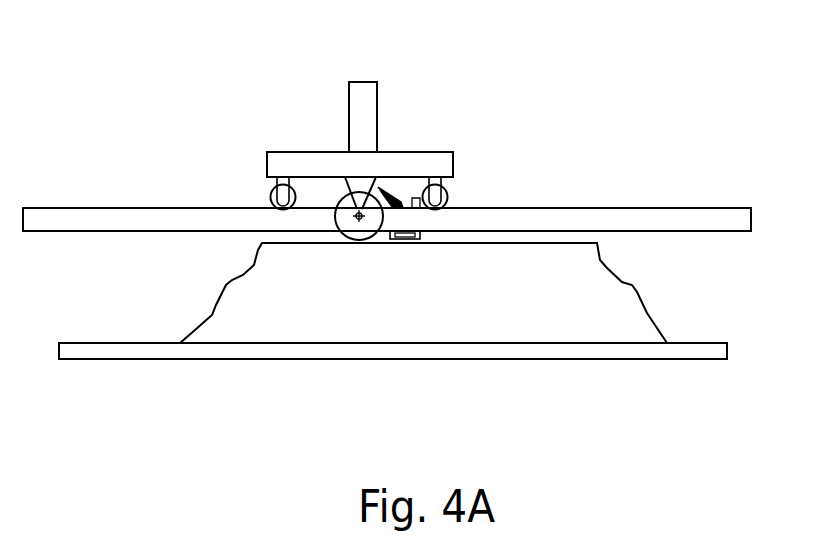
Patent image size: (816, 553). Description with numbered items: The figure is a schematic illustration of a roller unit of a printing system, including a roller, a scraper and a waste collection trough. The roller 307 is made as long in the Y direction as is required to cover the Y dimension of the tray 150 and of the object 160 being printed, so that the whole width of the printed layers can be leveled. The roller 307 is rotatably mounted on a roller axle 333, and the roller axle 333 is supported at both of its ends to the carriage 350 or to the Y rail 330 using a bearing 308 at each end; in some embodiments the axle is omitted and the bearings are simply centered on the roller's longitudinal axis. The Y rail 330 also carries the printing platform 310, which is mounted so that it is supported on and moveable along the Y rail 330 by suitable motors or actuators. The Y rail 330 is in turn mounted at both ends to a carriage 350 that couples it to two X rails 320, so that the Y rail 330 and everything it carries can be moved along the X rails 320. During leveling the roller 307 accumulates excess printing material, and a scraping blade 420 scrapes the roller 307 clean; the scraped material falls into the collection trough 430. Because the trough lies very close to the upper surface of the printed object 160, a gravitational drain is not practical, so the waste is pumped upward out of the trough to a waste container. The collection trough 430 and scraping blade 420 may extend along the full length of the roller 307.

The tray 150 is at (70, 353).
The object 160 is at (625, 313).
The roller 307 is at (337, 207).
The bearing 308 is at (365, 185).
The printing platform 310 is at (422, 160).
The X rail 320 is at (112, 218).
The Y rail 330 is at (368, 90).
The roller axle 333 is at (359, 222).
The carriage 350 is at (282, 168).
The scraping blade 420 is at (397, 195).
The collection trough 430 is at (420, 230).